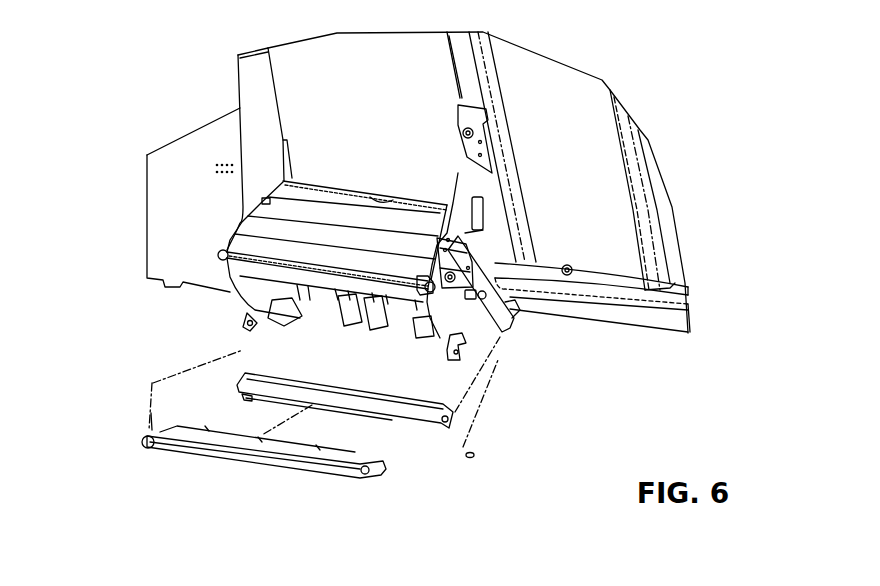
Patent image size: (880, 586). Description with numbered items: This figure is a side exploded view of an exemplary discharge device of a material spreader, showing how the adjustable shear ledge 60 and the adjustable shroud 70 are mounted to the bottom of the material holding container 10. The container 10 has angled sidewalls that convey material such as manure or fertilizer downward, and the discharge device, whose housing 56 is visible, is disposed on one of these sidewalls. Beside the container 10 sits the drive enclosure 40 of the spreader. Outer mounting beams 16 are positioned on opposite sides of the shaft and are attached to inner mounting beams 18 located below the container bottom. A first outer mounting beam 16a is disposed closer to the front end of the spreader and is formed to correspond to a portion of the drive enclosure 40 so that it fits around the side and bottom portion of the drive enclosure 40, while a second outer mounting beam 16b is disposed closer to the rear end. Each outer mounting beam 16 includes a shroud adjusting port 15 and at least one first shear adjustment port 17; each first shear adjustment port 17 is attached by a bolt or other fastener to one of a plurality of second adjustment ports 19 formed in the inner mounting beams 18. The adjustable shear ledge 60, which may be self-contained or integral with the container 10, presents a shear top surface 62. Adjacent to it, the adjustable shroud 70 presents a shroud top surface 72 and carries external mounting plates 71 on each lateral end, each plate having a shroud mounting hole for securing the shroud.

The material holding container 10 is at (597, 145).
The housing 56 is at (258, 155).
The drive enclosure 40 is at (188, 268).
The shroud adjusting port 15 is at (252, 323).
The outer mounting beams 16 is at (342, 289).
The first outer mounting beam 16a is at (263, 327).
The second outer mounting beam 16b is at (352, 360).
The first shear adjustment port 17 is at (497, 336).
The inner mounting beams 18 is at (517, 313).
The second adjustment ports 19 is at (497, 337).
The adjustable shear ledge 60 is at (236, 378).
The shear top surface 62 is at (417, 412).
The adjustable shroud 70 is at (274, 486).
The external mounting plates 71 is at (377, 473).
The shroud top surface 72 is at (337, 453).